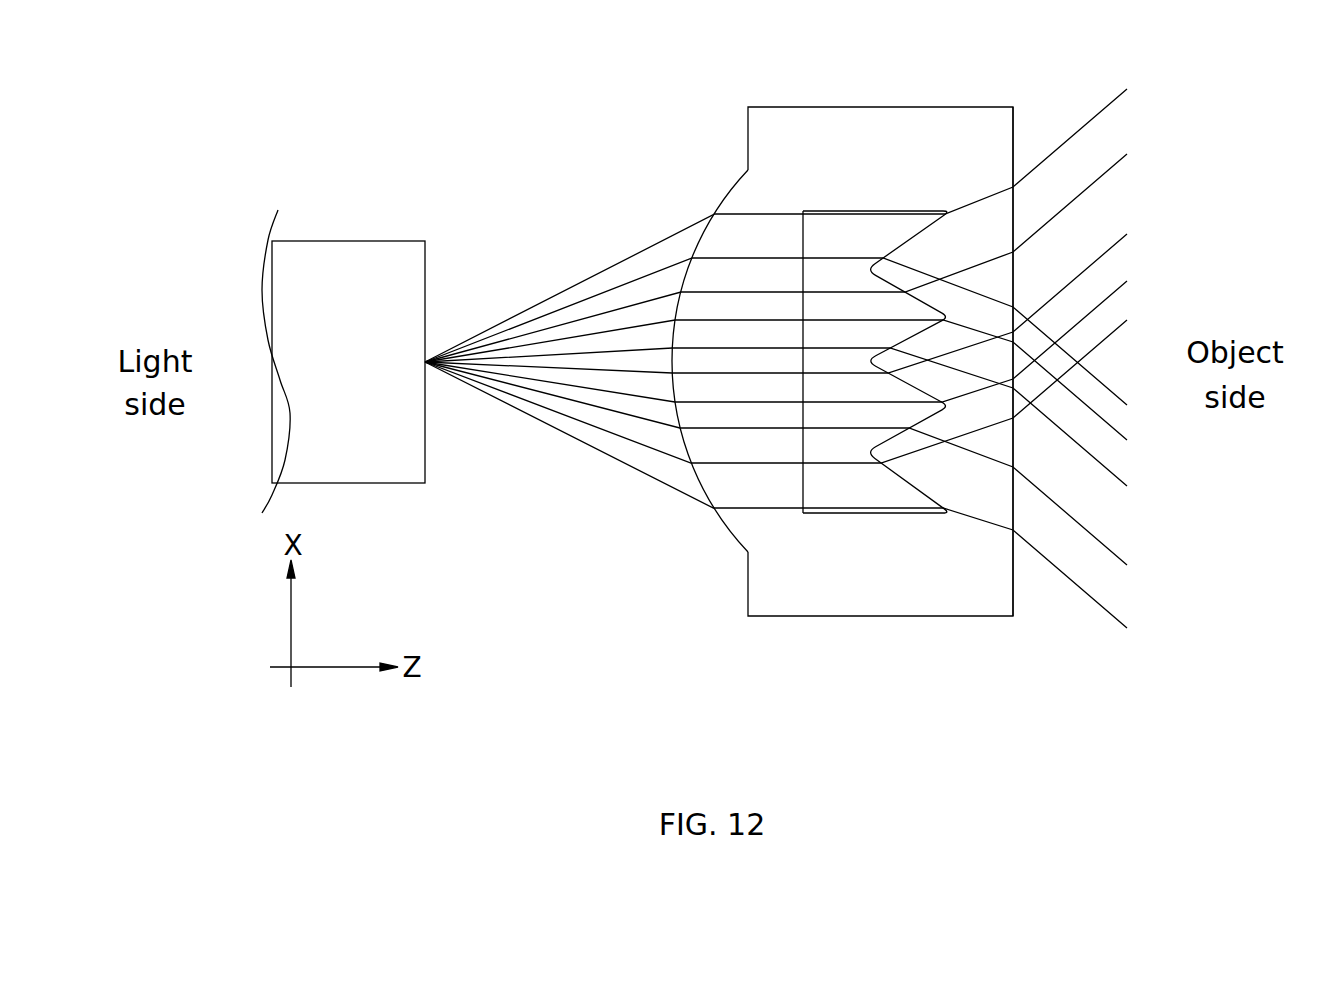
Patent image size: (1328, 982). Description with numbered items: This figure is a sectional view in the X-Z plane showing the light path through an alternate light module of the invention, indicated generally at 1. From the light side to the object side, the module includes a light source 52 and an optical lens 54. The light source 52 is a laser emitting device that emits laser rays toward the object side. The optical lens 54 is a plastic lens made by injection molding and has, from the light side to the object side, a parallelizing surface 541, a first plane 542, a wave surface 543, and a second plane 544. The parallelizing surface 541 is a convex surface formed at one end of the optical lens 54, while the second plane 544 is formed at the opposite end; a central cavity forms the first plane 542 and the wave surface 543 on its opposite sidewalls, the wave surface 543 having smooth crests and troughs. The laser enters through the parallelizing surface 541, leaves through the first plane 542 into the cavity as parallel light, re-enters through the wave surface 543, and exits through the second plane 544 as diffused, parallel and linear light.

The lighting device 1 is at (208, 98).
The light source 52 is at (346, 241).
The optical lens 54 is at (878, 583).
The parallelizing surface 541 is at (723, 523).
The first plane 542 is at (803, 513).
The wave surface 543 is at (938, 513).
The second plane 544 is at (1015, 598).